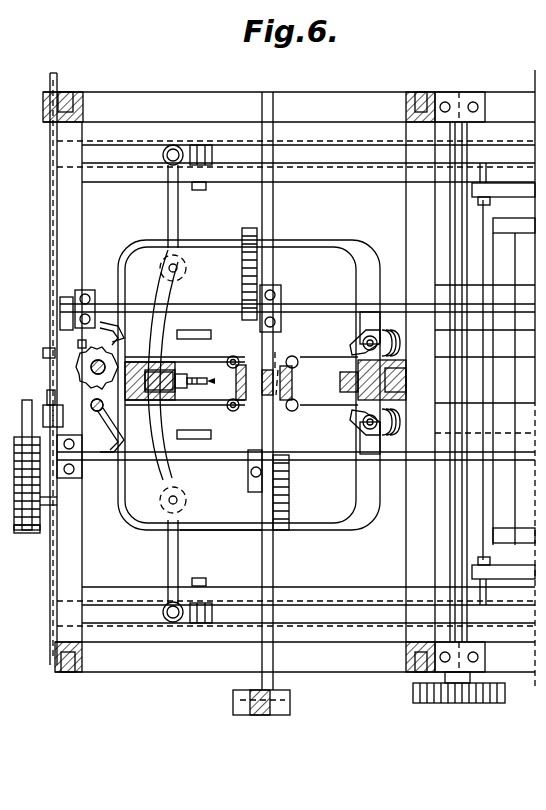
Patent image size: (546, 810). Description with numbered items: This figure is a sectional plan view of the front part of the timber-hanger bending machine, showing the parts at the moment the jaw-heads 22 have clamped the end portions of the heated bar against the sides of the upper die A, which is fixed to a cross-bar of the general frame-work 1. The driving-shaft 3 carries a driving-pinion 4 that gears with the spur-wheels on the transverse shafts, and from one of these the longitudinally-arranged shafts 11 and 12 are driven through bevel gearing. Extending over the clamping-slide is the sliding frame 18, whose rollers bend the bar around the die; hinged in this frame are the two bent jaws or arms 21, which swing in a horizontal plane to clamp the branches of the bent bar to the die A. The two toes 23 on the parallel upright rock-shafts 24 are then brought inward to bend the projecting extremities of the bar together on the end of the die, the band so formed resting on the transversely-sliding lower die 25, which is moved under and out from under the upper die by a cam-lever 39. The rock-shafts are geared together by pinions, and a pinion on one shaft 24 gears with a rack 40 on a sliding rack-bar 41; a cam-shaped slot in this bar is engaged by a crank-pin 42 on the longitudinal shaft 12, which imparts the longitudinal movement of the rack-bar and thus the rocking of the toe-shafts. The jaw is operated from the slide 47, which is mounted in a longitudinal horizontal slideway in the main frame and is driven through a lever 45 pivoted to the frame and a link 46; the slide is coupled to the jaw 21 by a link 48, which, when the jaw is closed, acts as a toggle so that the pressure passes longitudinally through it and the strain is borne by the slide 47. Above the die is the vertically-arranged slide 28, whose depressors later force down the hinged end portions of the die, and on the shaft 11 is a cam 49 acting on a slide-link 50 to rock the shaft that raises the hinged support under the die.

The general frame-work 1 is at (289, 384).
The driving-shaft 3 is at (455, 535).
The driving-pinion 4 is at (440, 715).
The longitudinal shaft 11 is at (322, 460).
The longitudinal shaft 12 is at (312, 312).
The sliding frame 18 is at (417, 380).
The bent jaws or arms 21 is at (249, 385).
The jaw-heads 22 is at (185, 388).
The toes 23 is at (106, 292).
The upright rock-shaft 24 is at (106, 410).
The lower die 25 is at (283, 562).
The vertically-arranged slide 28 is at (337, 391).
The cam-lever 39 is at (260, 715).
The rack 40 is at (80, 375).
The sliding rack-bar 41 is at (52, 243).
The crank-pin 42 is at (58, 323).
The lever 45 is at (503, 384).
The link 46 is at (296, 383).
The slide 47 is at (199, 383).
The link 48 is at (178, 210).
The cam 49 is at (33, 460).
The slide-link 50 is at (35, 530).
The upper die A is at (282, 381).